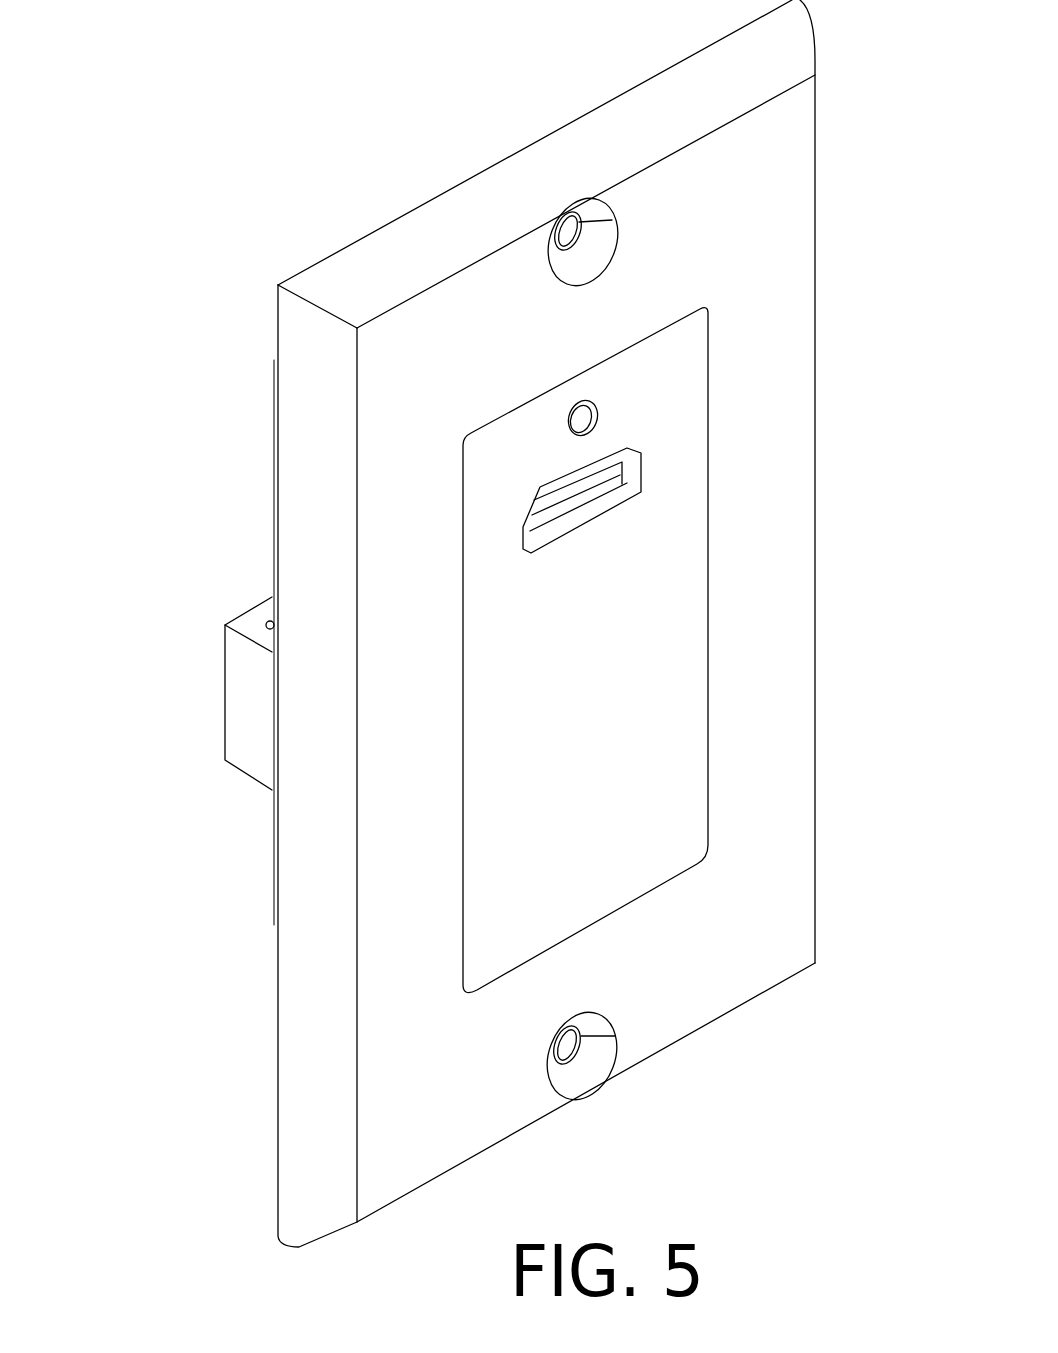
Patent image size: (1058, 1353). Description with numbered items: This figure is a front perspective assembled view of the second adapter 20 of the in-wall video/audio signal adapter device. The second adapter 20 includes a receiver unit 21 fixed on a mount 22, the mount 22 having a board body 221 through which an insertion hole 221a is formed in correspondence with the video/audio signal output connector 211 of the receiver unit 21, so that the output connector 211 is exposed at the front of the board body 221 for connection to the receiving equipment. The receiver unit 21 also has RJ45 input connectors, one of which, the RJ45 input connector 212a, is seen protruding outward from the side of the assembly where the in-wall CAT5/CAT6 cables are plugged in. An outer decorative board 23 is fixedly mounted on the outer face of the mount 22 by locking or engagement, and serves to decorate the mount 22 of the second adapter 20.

The second adapter 20 is at (412, 222).
The receiver unit 21 is at (605, 627).
The video/audio signal output connector 211 is at (642, 483).
The RJ45 input connector 212a is at (232, 699).
The mount 22 is at (677, 420).
The board body 221 is at (657, 708).
The insertion hole 221a is at (622, 503).
The outer decorative board 23 is at (770, 173).